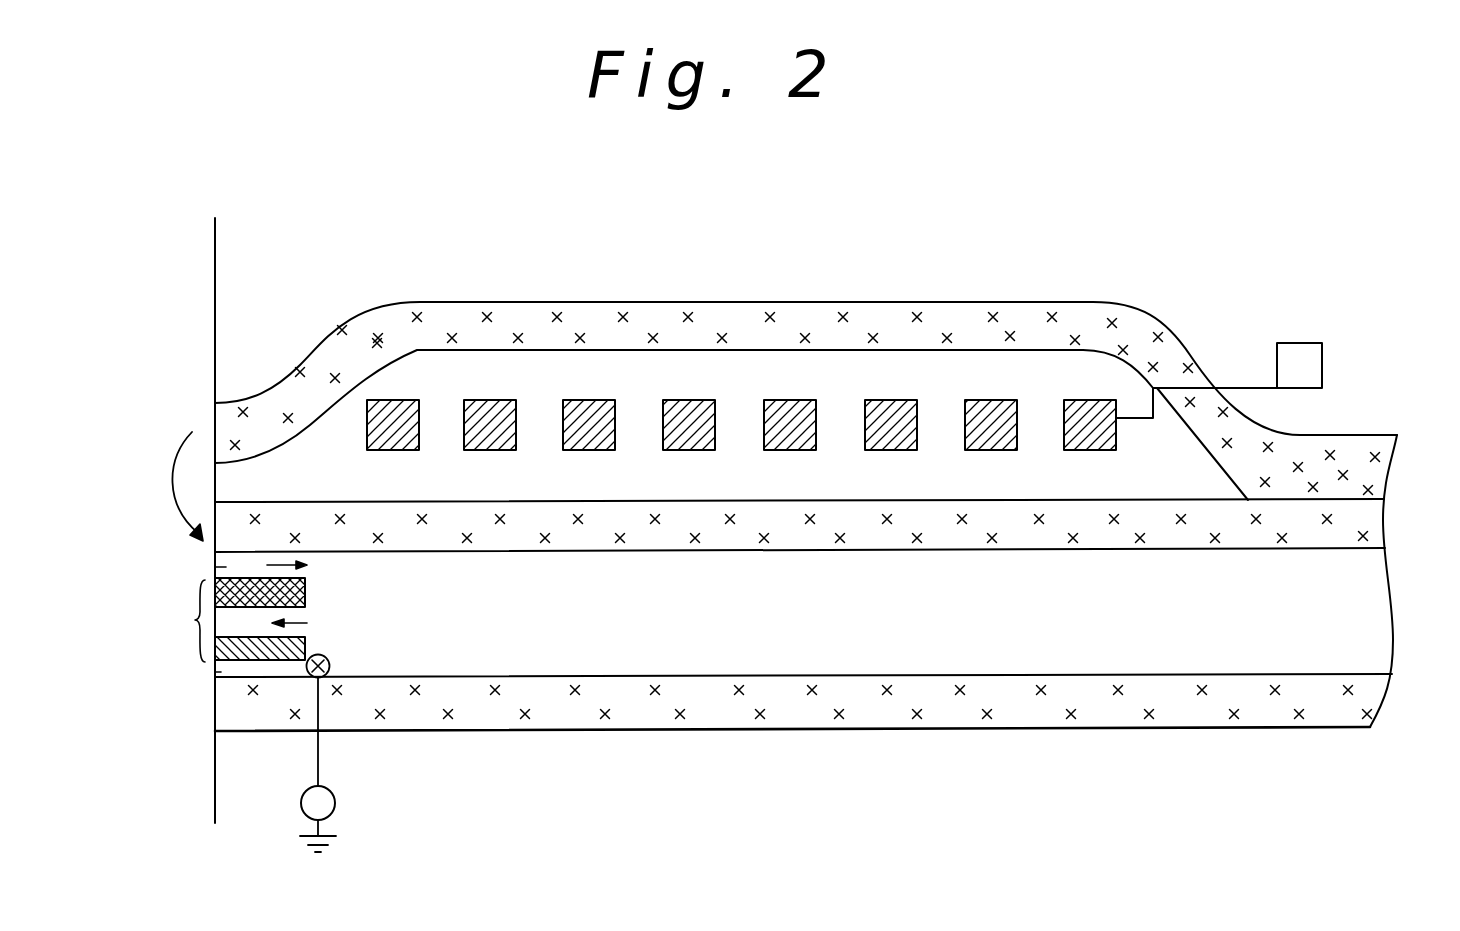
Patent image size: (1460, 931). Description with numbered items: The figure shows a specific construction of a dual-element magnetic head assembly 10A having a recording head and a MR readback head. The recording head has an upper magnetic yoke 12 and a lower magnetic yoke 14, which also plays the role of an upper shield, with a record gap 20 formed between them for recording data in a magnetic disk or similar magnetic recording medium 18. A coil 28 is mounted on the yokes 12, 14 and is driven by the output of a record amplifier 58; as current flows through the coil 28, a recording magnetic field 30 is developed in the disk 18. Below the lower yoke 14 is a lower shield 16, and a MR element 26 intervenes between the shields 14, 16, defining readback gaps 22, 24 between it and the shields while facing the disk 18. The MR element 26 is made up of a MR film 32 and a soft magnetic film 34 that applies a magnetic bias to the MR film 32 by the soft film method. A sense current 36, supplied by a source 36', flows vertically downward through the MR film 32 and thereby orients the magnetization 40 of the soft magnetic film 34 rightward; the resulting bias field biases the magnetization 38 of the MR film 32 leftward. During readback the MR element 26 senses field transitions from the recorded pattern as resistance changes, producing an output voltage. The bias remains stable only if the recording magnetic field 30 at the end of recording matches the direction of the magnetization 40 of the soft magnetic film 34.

The dual-element magnetic head assembly 10A is at (1090, 266).
The upper magnetic yoke 12 is at (673, 310).
The lower magnetic yoke 14 is at (797, 530).
The lower shield 16 is at (962, 716).
The magnetic recording medium 18 is at (215, 767).
The record gap 20 is at (232, 485).
The readback gap 22 is at (215, 567).
The readback gap 24 is at (220, 672).
The MR element 26 is at (176, 621).
The coil 28 is at (800, 417).
The recording magnetic field 30 is at (175, 452).
The MR film 32 is at (280, 660).
The soft magnetic film 34 is at (307, 592).
The sense current 36 is at (281, 762).
The sense current source 36' is at (346, 790).
The magnetization of the MR film 38 is at (300, 623).
The magnetization of the soft magnetic film 40 is at (307, 565).
The record amplifier 58 is at (1299, 330).